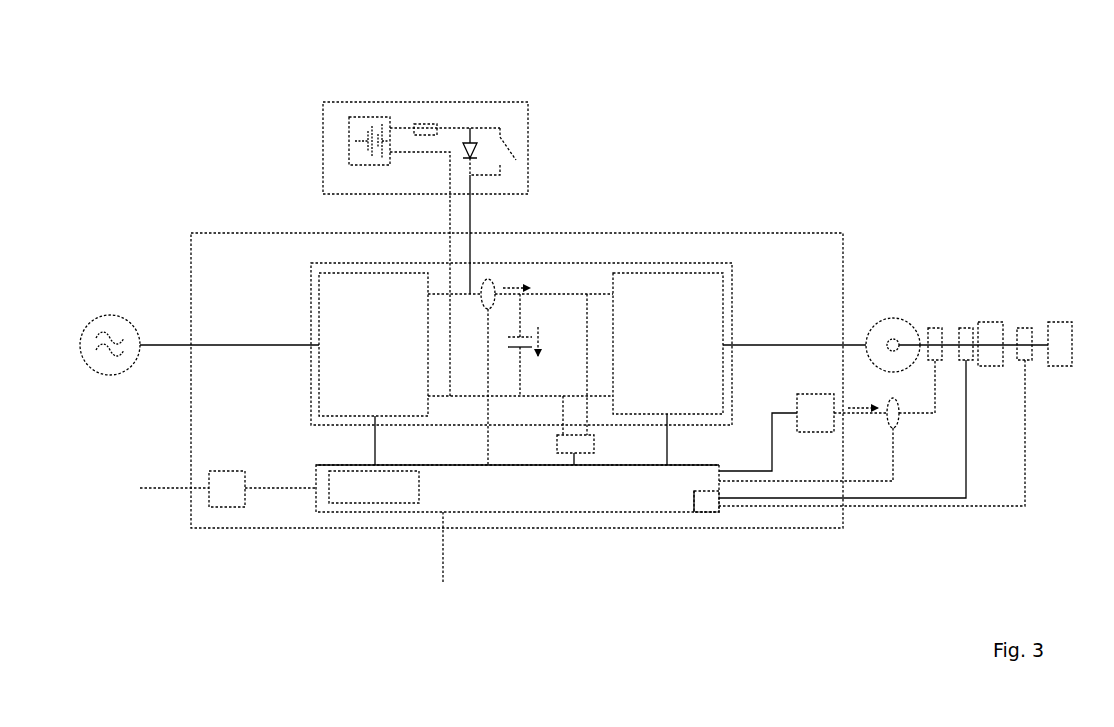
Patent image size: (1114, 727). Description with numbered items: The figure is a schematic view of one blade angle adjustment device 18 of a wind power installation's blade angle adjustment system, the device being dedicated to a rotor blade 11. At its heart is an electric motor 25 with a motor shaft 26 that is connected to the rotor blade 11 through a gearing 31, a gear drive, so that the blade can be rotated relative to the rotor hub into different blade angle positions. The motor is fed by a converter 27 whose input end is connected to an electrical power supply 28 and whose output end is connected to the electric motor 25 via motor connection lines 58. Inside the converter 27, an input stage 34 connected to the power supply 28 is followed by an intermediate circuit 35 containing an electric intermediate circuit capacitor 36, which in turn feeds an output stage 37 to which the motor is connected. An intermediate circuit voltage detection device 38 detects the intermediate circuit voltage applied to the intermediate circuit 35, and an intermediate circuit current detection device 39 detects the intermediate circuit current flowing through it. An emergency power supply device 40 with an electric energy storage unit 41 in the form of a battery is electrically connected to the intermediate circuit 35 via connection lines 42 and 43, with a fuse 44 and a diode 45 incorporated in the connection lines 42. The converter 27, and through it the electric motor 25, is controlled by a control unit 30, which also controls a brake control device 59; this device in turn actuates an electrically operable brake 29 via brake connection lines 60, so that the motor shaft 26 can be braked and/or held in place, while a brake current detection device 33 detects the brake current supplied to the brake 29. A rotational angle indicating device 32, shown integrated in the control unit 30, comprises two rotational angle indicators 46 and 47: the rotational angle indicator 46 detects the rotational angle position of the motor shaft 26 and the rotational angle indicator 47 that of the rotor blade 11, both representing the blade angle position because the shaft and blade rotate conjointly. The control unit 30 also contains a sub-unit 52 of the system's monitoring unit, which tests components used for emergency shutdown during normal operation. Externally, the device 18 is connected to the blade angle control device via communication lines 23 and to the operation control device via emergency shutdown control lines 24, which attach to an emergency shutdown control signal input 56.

The rotor blade 11 is at (1062, 366).
The blade angle adjustment device 18 is at (160, 188).
The communication lines 23 is at (443, 547).
The emergency shutdown control lines 24 is at (175, 489).
The electric motor 25 is at (882, 318).
The motor shaft 26 is at (917, 325).
The converter 27 is at (330, 262).
The electrical power supply 28 is at (100, 375).
The brake 29 is at (935, 328).
The control unit 30 is at (316, 497).
The gearing 31 is at (992, 322).
The rotational angle indicating device 32 is at (708, 505).
The brake current detection device 33 is at (897, 425).
The rectifier 34 is at (325, 398).
The intermediate circuit 35 is at (566, 284).
The intermediate circuit capacitor 36 is at (520, 350).
The inverter 37 is at (680, 280).
The intermediate circuit voltage detection device 38 is at (594, 445).
The intermediate circuit current detection device 39 is at (490, 280).
The emergency power supply device 40 is at (345, 102).
The electric energy storage unit 41 is at (349, 128).
The connection lines 42 is at (470, 218).
The connection lines 43 is at (450, 215).
The fuse 44 is at (425, 124).
The diode 45 is at (478, 142).
The rotational angle indicator 46 is at (966, 328).
The rotational angle indicator 47 is at (1025, 328).
The sub-unit 52 is at (370, 492).
The emergency shutdown control signal input 56 is at (228, 500).
The motor connection lines 58 is at (770, 345).
The brake control device 59 is at (815, 394).
The brake connection lines 60 is at (865, 420).